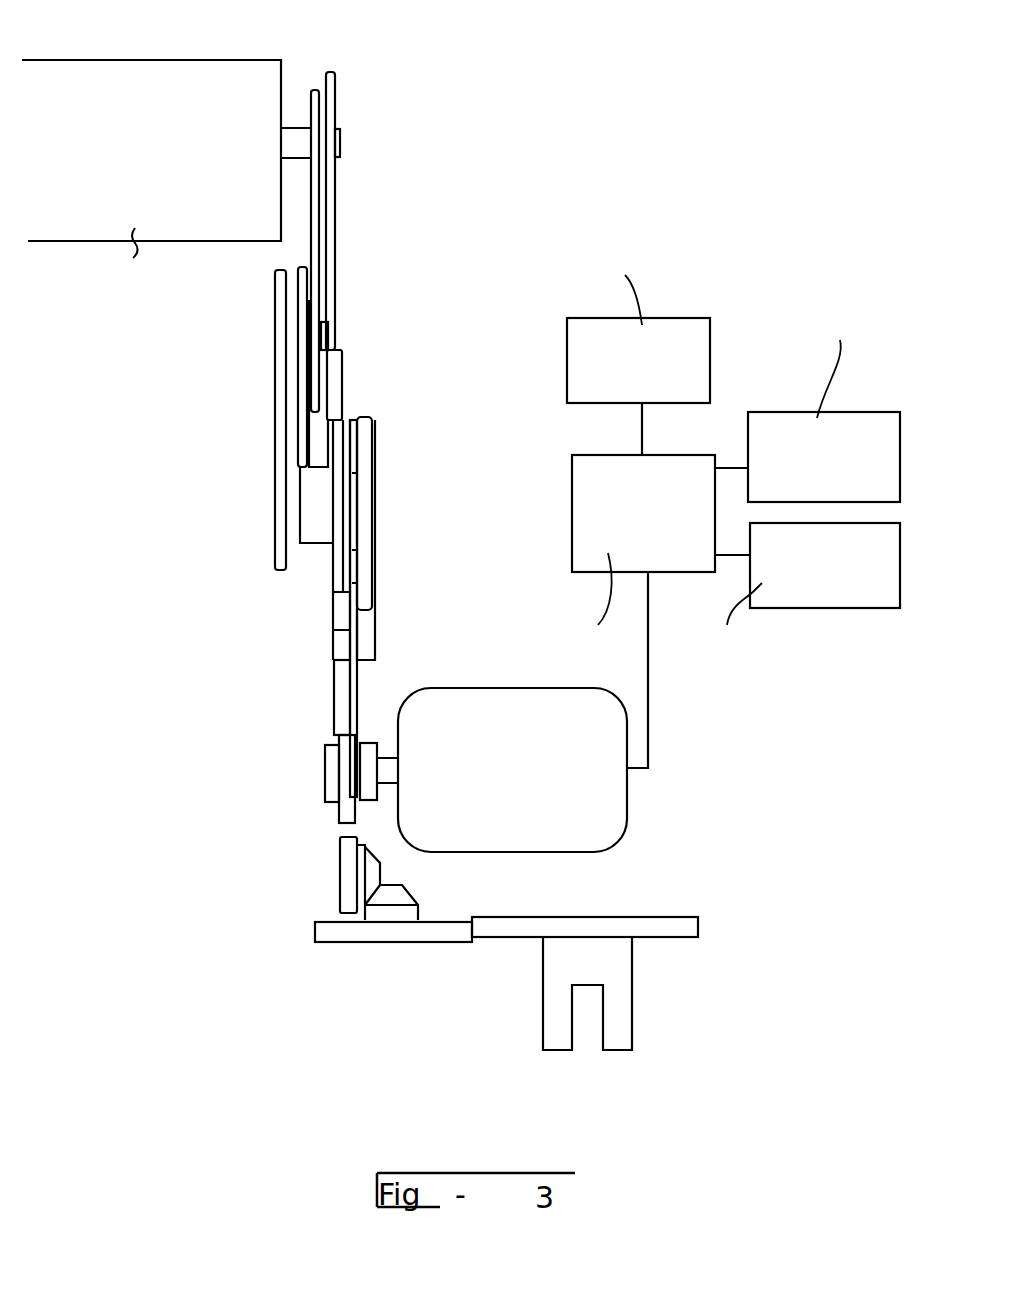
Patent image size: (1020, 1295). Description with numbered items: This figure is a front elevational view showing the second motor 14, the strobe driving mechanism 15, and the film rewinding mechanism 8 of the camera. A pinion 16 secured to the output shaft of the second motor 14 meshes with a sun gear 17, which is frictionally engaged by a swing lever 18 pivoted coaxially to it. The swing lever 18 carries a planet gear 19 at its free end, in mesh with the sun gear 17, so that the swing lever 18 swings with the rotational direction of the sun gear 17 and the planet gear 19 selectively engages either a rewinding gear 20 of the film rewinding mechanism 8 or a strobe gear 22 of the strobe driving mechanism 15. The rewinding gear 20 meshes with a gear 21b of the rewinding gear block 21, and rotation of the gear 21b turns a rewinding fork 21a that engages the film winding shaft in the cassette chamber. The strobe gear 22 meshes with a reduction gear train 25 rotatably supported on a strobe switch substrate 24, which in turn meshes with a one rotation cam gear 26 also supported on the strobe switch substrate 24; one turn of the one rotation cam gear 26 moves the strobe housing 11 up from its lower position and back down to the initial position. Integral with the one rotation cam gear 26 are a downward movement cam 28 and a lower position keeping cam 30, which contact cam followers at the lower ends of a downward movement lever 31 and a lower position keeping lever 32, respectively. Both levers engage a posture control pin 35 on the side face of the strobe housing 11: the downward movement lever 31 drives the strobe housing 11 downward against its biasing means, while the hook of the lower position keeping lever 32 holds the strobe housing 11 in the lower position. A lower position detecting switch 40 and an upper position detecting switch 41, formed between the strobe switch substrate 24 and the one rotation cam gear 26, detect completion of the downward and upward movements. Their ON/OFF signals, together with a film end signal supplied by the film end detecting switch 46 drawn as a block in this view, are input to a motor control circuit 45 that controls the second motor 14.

The film rewinding mechanism 8 is at (358, 964).
The strobe housing 11 is at (151, 172).
The second motor 14 is at (610, 800).
The strobe driving mechanism 15 is at (428, 223).
The pinion 16 is at (332, 790).
The sun gear 17 is at (342, 760).
The swing lever 18 is at (360, 712).
The planet gear 19 is at (337, 710).
The rewinding gear 20 is at (345, 886).
The rewinding gear block 21 is at (508, 955).
The rewinding fork 21a is at (622, 1005).
The gear of the rewinding gear block 21b is at (402, 888).
The strobe gear 22 is at (337, 618).
The strobe switch substrate 24 is at (277, 403).
The reduction gear train 25 is at (384, 612).
The one rotation cam gear 26 is at (301, 432).
The downward movement cam 28 is at (326, 328).
The lower position keeping cam 30 is at (338, 378).
The downward movement lever 31 is at (313, 88).
The lower position keeping lever 32 is at (335, 74).
The posture control pin 35 is at (341, 141).
The lower position detecting switch 40 is at (833, 410).
The upper position detecting switch 41 is at (835, 610).
The motor control circuit 45 is at (570, 502).
The film end detecting switch 46 is at (710, 370).